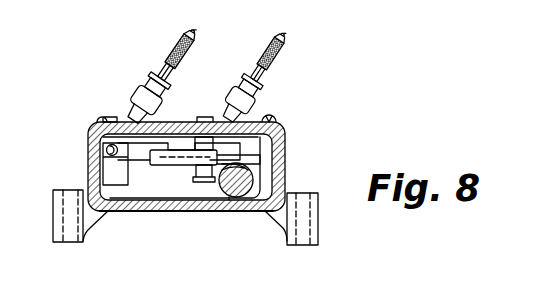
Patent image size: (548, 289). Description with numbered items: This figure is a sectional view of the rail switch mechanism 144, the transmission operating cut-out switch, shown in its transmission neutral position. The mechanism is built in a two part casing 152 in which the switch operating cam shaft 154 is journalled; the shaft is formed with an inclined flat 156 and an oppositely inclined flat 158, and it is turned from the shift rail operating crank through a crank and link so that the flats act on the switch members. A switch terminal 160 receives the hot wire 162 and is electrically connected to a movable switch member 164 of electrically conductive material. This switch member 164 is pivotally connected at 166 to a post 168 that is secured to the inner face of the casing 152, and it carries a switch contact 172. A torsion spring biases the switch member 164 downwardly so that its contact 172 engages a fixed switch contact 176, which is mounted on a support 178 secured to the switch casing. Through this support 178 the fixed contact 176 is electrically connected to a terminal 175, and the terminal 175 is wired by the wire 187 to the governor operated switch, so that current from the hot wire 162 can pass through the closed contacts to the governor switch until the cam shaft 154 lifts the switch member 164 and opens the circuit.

The rail switch mechanism 144 is at (254, 108).
The two part casing 152 is at (167, 212).
The switch operating cam shaft 154 is at (252, 186).
The inclined flat 156 is at (258, 174).
The oppositely inclined flat 158 is at (262, 158).
The switch terminal 160 is at (128, 97).
The hot wire 162 is at (176, 44).
The movable switch member 164 is at (152, 145).
The pivotal connection 166 is at (100, 158).
The post 168 is at (117, 185).
The switch contact 172 is at (195, 172).
The terminal 175 is at (256, 82).
The fixed switch contact 176 is at (205, 183).
The support 178 is at (224, 192).
The wire 187 is at (265, 48).